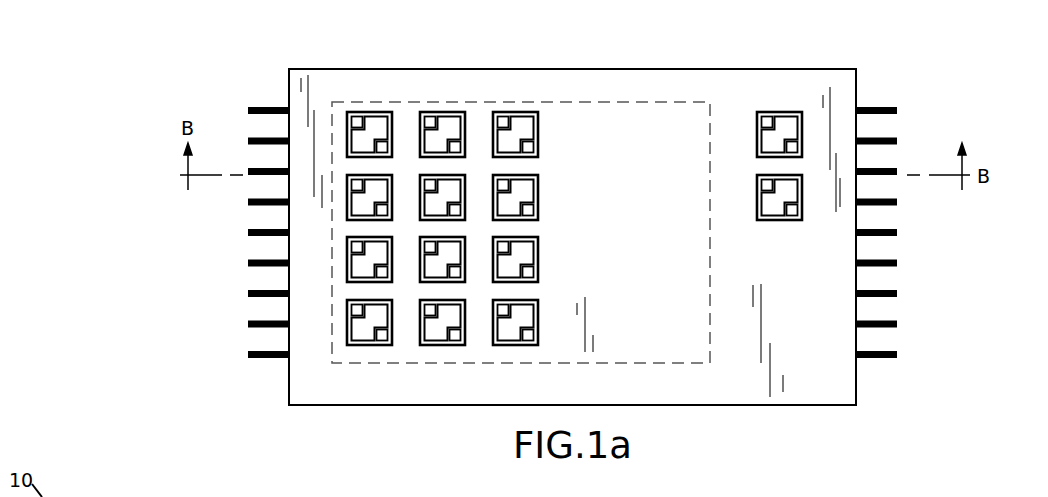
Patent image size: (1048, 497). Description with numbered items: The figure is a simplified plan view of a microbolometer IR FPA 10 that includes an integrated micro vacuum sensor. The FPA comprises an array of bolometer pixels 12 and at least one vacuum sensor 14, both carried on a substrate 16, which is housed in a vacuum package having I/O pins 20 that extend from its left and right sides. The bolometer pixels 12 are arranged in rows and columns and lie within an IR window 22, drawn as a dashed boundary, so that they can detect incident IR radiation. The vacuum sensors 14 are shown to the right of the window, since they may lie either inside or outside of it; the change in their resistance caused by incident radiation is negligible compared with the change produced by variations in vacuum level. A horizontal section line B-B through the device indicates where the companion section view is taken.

The microbolometer IR FPA 10 is at (166, 163).
The bolometer pixels 12 is at (368, 123).
The vacuum sensor 14 is at (775, 125).
The substrate 16 is at (833, 382).
The I/O pins 20 is at (878, 106).
The IR window 22 is at (567, 102).